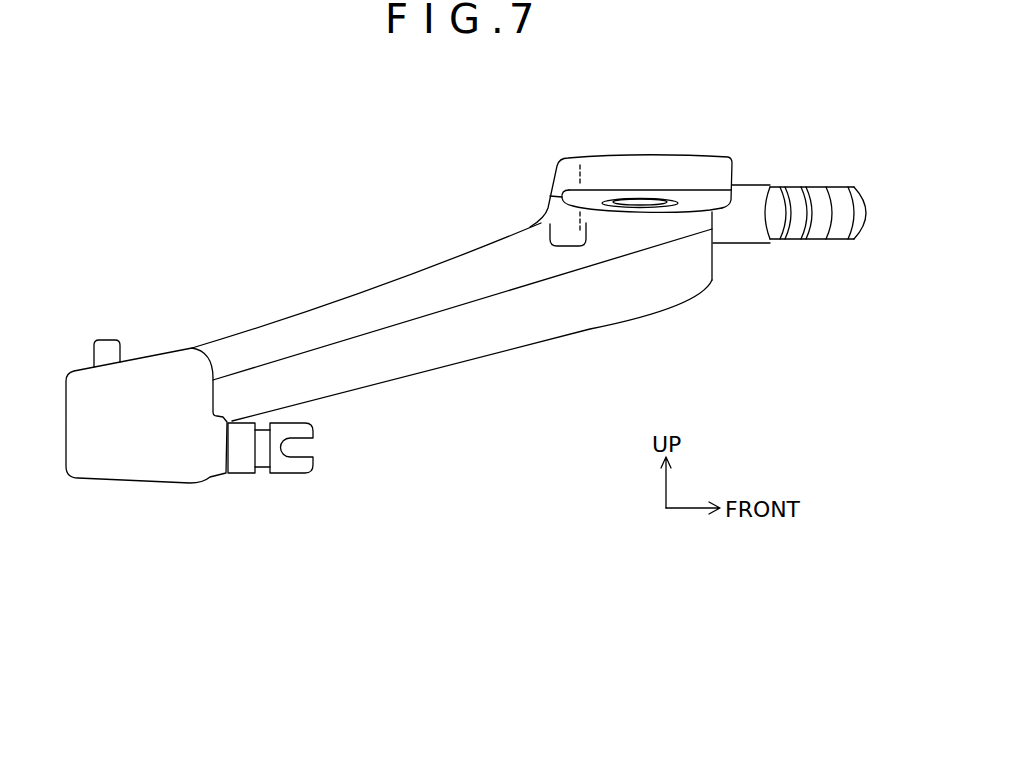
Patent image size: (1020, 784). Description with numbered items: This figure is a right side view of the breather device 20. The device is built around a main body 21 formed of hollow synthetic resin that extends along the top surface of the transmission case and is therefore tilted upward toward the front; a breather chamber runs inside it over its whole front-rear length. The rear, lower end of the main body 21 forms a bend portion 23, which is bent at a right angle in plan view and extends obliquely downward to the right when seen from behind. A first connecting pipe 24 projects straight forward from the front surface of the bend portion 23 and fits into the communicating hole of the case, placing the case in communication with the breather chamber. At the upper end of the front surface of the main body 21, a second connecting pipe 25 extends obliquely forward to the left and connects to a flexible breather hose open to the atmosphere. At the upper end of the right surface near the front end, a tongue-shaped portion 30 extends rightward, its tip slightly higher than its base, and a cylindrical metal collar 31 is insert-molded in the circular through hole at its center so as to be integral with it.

The breather device 20 is at (265, 195).
The main body 21 is at (414, 272).
The bend portion 23 is at (117, 466).
The first connecting pipe 24 is at (287, 476).
The second connecting pipe 25 is at (822, 187).
The tongue-shaped portion 30 is at (615, 162).
The cylindrical metal collar 31 is at (607, 207).